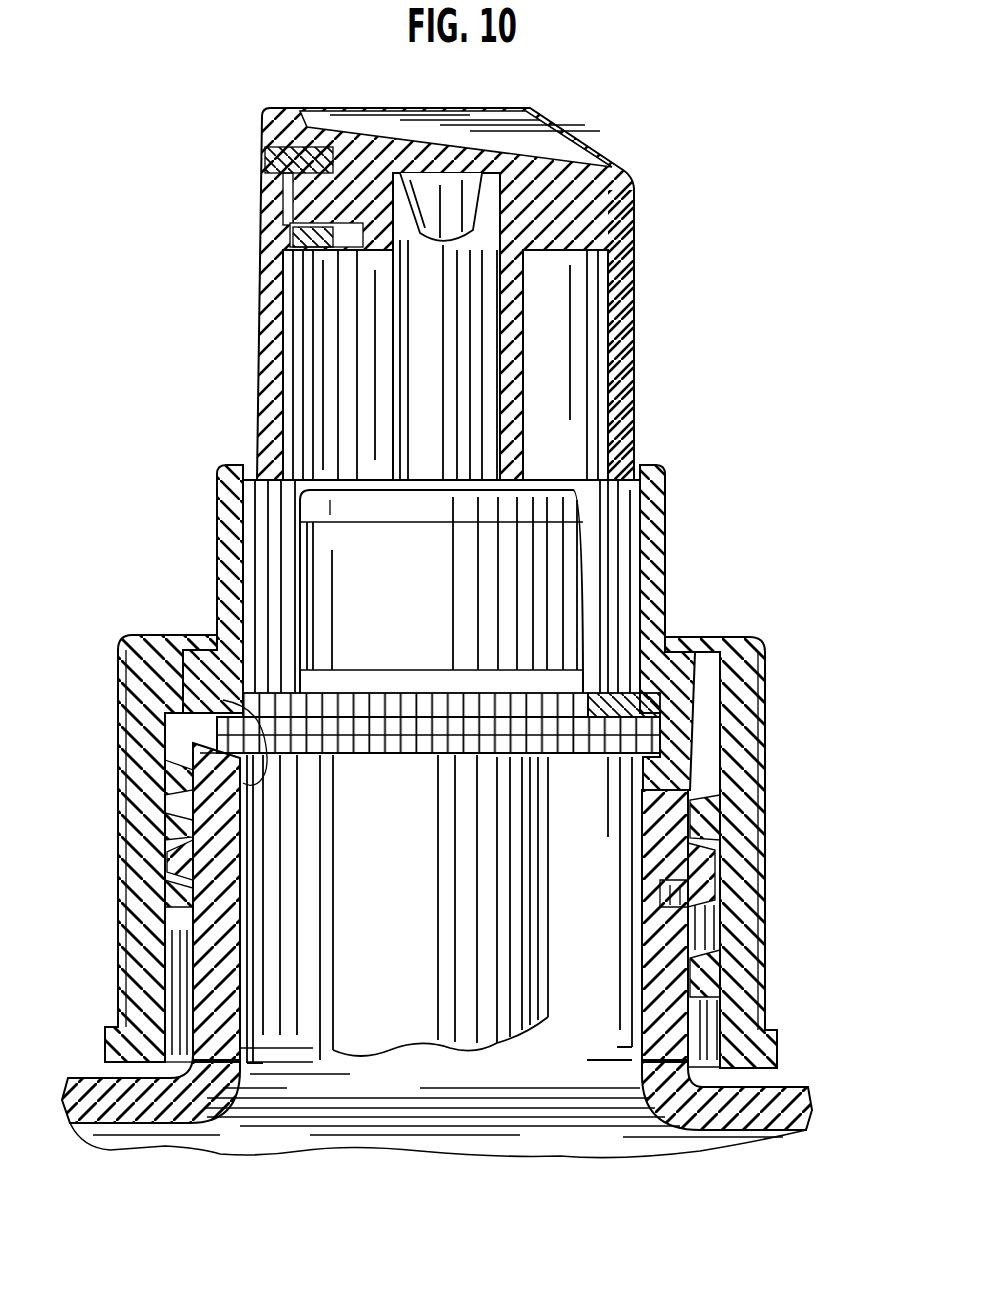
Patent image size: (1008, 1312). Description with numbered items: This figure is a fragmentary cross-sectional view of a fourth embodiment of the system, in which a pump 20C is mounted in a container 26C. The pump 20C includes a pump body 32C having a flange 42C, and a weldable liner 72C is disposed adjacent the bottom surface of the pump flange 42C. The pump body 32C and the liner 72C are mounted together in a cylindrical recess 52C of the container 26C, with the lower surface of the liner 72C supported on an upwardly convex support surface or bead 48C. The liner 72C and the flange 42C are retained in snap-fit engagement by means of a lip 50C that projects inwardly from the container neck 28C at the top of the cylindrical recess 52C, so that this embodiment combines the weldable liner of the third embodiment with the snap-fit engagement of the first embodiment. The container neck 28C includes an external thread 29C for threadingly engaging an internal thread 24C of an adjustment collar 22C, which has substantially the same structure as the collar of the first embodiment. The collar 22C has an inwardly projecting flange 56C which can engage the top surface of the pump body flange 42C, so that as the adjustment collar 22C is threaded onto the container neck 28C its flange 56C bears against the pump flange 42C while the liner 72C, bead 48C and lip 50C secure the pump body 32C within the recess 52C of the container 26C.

The pump 20C is at (655, 244).
The adjustment collar 22C is at (770, 648).
The internal thread 24C is at (697, 890).
The container 26C is at (794, 1078).
The container neck 28C is at (706, 995).
The external thread 29C is at (702, 828).
The pump body 32C is at (595, 546).
The flange 42C is at (545, 668).
The bead 48C is at (240, 770).
The lip 50C is at (228, 614).
The cylindrical recess 52C is at (262, 692).
The inwardly projecting flange 56C is at (615, 698).
The weldable liner 72C is at (570, 757).